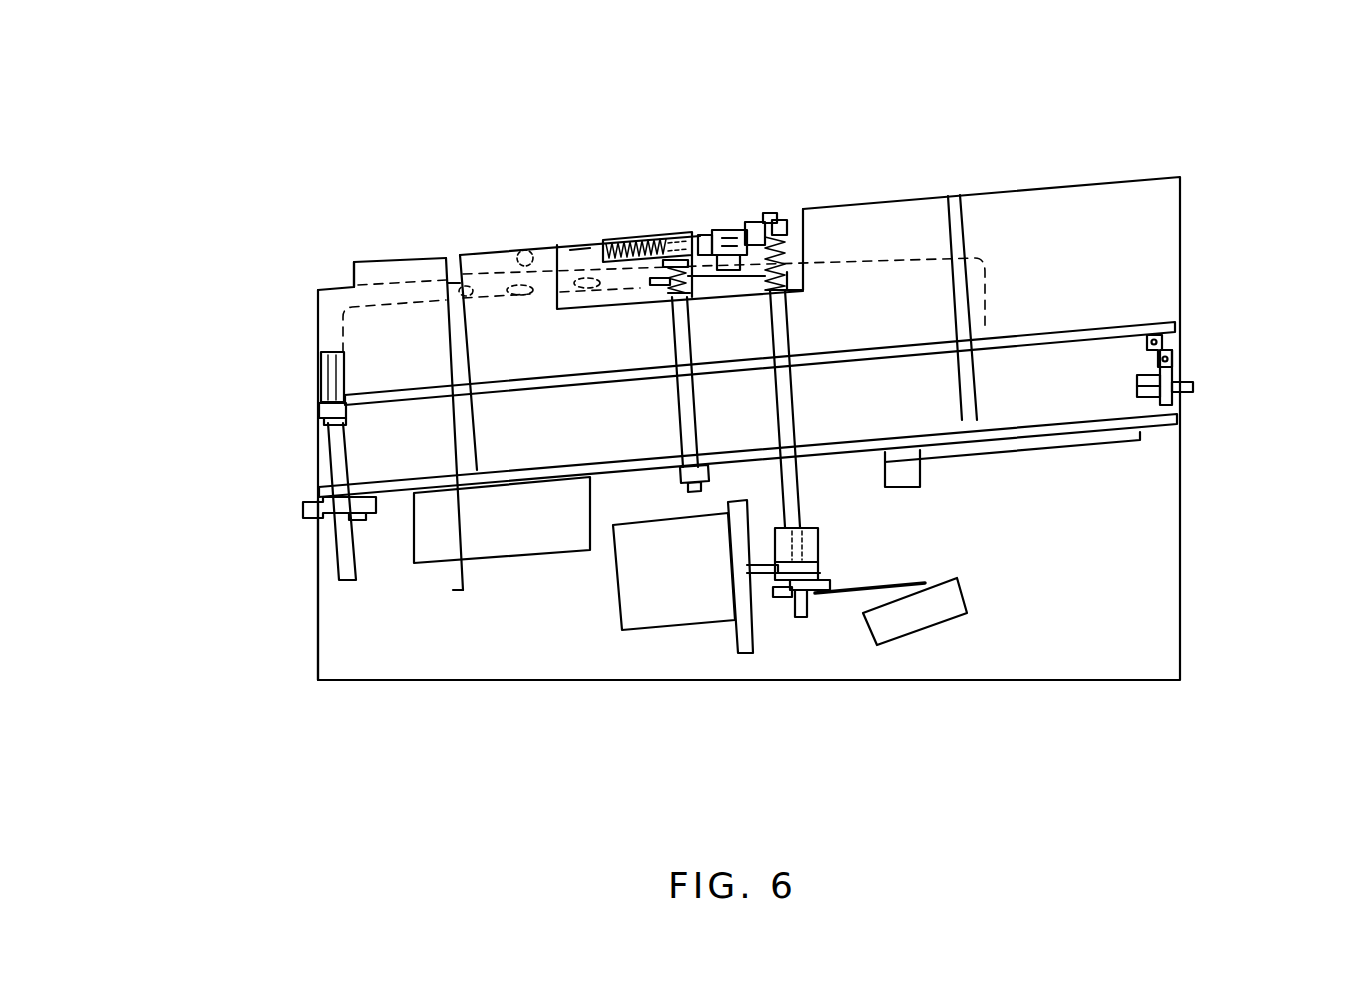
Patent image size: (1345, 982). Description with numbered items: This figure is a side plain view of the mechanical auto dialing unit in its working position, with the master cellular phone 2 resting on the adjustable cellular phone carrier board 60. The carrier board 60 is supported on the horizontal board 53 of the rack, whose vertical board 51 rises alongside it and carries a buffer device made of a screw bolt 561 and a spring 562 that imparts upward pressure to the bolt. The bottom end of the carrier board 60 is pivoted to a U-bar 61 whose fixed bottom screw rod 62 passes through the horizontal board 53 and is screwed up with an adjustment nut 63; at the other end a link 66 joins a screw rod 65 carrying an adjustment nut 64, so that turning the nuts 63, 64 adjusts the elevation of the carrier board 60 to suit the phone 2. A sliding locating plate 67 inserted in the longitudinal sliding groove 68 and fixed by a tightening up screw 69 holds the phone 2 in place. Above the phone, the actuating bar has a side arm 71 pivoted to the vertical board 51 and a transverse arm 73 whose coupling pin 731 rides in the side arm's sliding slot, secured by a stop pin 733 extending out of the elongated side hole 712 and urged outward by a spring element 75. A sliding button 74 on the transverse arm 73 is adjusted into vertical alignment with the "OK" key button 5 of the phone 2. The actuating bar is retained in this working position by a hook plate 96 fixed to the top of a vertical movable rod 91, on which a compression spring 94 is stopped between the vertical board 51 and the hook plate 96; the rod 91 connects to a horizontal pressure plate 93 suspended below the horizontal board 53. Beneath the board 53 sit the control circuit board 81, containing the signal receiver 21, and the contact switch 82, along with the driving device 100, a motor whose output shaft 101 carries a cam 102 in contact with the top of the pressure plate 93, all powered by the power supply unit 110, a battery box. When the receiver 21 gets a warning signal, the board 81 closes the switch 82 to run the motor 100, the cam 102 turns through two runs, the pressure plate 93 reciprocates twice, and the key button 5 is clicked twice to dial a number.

The master cellular phone 2 is at (885, 262).
The "OK" key button 5 is at (703, 240).
The signal receiver 21 is at (913, 470).
The vertical board 51 is at (1088, 183).
The horizontal board 53 is at (396, 490).
The adjustable cellular phone carrier board 60 is at (1103, 328).
The U-bar 61 is at (319, 405).
The fixed bottom screw rod 62 is at (336, 450).
The adjustment nut 63 is at (302, 507).
The adjustment nut 64 is at (1193, 388).
The screw rod 65 is at (1172, 372).
The link 66 is at (1167, 348).
The sliding locating plate 67 is at (324, 360).
The longitudinal sliding groove 68 is at (430, 390).
The tightening up screw 69 is at (328, 353).
The side arm 71 is at (675, 350).
The transverse arm 73 is at (748, 248).
The sliding button 74 is at (712, 228).
The spring element 75 is at (618, 242).
The control circuit board 81 is at (1105, 435).
The contact switch 82 is at (930, 610).
The vertical movable rod 91 is at (843, 270).
The horizontal pressure plate 93 is at (775, 600).
The compression spring 94 is at (790, 257).
The hook plate 96 is at (750, 226).
The driving device 100 is at (673, 610).
The output shaft 101 is at (813, 598).
The cam 102 is at (822, 527).
The power supply unit 110 is at (468, 543).
The screw bolt 561 is at (557, 252).
The spring 562 is at (583, 243).
The elongated side hole 712 is at (642, 240).
The coupling pin 731 is at (688, 250).
The stop pin 733 is at (662, 242).